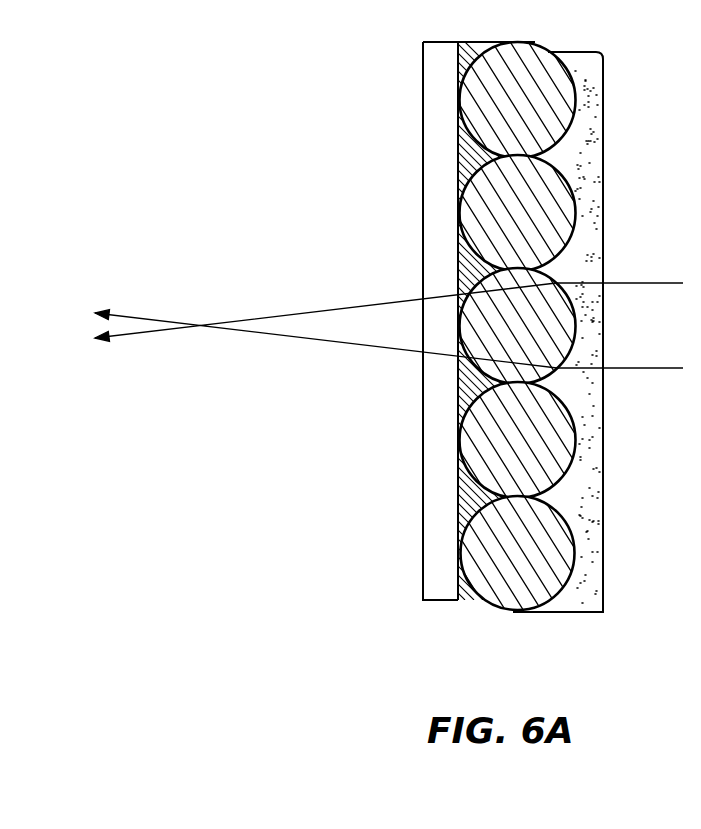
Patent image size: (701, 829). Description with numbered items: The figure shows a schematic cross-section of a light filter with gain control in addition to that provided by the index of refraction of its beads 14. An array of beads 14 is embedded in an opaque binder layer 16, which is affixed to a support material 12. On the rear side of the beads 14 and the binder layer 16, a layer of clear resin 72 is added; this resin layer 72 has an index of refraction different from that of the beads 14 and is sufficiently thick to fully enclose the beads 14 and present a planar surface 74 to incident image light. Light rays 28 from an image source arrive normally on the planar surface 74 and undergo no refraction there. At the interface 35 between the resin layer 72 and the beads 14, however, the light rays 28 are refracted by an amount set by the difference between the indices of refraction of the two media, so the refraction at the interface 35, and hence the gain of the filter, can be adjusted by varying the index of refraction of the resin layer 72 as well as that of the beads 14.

The support material 12 is at (440, 600).
The opaque binder layer 16 is at (462, 502).
The beads 14 is at (565, 438).
The resin layer 72 is at (592, 129).
The planar surface 74 is at (603, 510).
The interface 35 is at (597, 222).
The light rays 28 is at (630, 283).